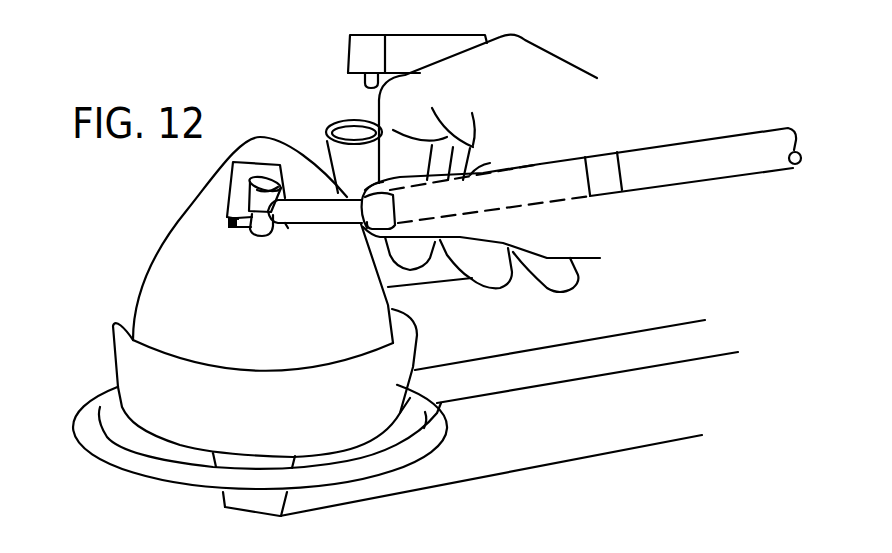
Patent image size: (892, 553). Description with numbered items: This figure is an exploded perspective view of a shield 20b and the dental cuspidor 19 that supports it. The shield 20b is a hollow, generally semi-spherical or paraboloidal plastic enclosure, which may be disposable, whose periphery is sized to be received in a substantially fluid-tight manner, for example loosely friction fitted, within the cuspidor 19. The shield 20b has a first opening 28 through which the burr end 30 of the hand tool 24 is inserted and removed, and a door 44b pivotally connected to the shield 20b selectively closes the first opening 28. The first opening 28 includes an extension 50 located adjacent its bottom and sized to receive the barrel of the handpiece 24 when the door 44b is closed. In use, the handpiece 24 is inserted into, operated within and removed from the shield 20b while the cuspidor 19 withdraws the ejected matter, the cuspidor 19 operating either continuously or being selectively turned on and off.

The cuspidor 19 is at (110, 342).
The shield 20b is at (150, 233).
The hand tool 24 is at (307, 230).
The first opening 28 is at (233, 226).
The burr end 30 is at (255, 196).
The door 44b is at (247, 168).
The extension 50 is at (258, 237).